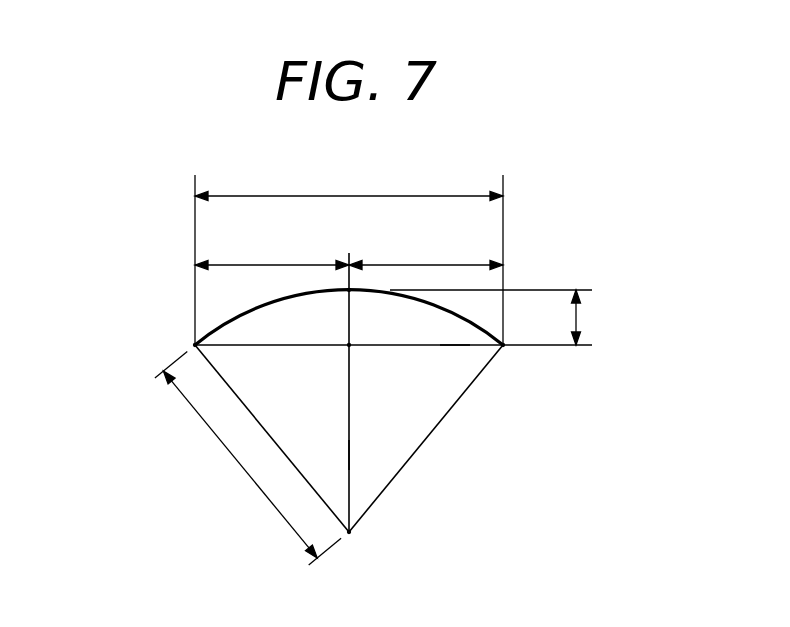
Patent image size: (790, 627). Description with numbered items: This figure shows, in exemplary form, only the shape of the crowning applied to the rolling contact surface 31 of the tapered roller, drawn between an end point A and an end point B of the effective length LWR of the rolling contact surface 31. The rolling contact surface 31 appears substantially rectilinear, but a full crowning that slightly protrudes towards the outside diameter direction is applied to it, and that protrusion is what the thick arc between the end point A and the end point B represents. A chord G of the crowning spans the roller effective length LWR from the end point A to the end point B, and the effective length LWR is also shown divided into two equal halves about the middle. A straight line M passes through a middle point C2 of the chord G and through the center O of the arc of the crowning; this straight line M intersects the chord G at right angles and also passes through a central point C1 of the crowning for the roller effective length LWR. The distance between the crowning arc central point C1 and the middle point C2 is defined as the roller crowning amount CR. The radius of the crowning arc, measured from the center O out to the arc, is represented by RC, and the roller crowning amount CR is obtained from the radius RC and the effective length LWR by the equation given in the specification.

The rolling contact surface 31 is at (232, 316).
The effective length of the rolling contact surface LWR is at (349, 218).
The roller crowning amount CR is at (504, 317).
The radius of the crowning arc RC is at (248, 458).
The end point A is at (193, 344).
The end point B is at (507, 349).
The central point of the crowning C1 is at (354, 294).
The middle point of the chord C2 is at (353, 349).
The chord of the crowning G is at (455, 350).
The straight line M is at (352, 456).
The center of the arc of the crowning O is at (353, 537).